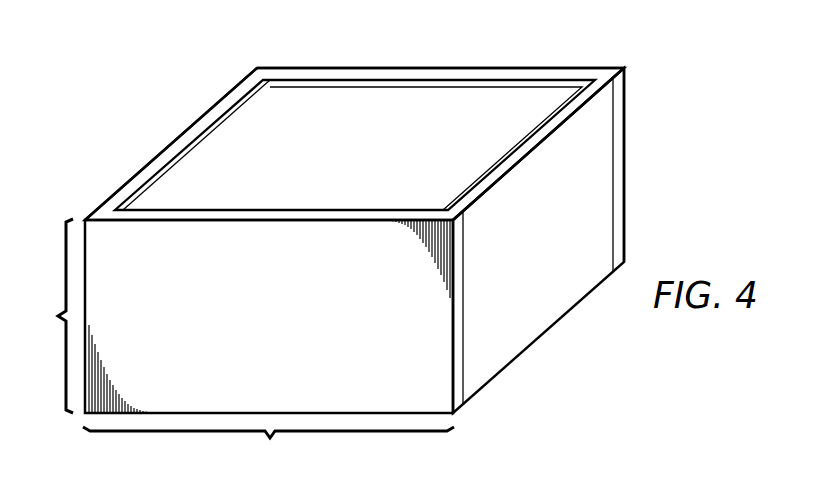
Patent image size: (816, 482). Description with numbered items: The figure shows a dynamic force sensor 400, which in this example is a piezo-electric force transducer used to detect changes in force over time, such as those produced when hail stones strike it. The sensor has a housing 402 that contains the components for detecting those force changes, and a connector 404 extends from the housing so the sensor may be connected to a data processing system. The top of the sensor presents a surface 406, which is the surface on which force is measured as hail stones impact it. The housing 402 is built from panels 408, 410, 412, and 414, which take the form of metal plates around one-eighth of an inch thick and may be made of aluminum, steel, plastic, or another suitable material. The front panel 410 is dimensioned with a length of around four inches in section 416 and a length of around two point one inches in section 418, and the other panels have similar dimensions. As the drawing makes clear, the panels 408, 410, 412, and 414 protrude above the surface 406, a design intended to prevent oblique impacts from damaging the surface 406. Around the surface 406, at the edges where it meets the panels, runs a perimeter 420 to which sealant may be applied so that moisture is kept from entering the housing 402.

The dynamic force sensor 400 is at (204, 60).
The housing 402 is at (634, 164).
The connector 404 is at (537, 339).
The surface 406 is at (378, 155).
The panel 408 is at (550, 70).
The panel 410 is at (288, 332).
The panel 412 is at (167, 147).
The panel 414 is at (561, 252).
The section 416 is at (268, 449).
The section 418 is at (44, 316).
The perimeter 420 is at (223, 116).